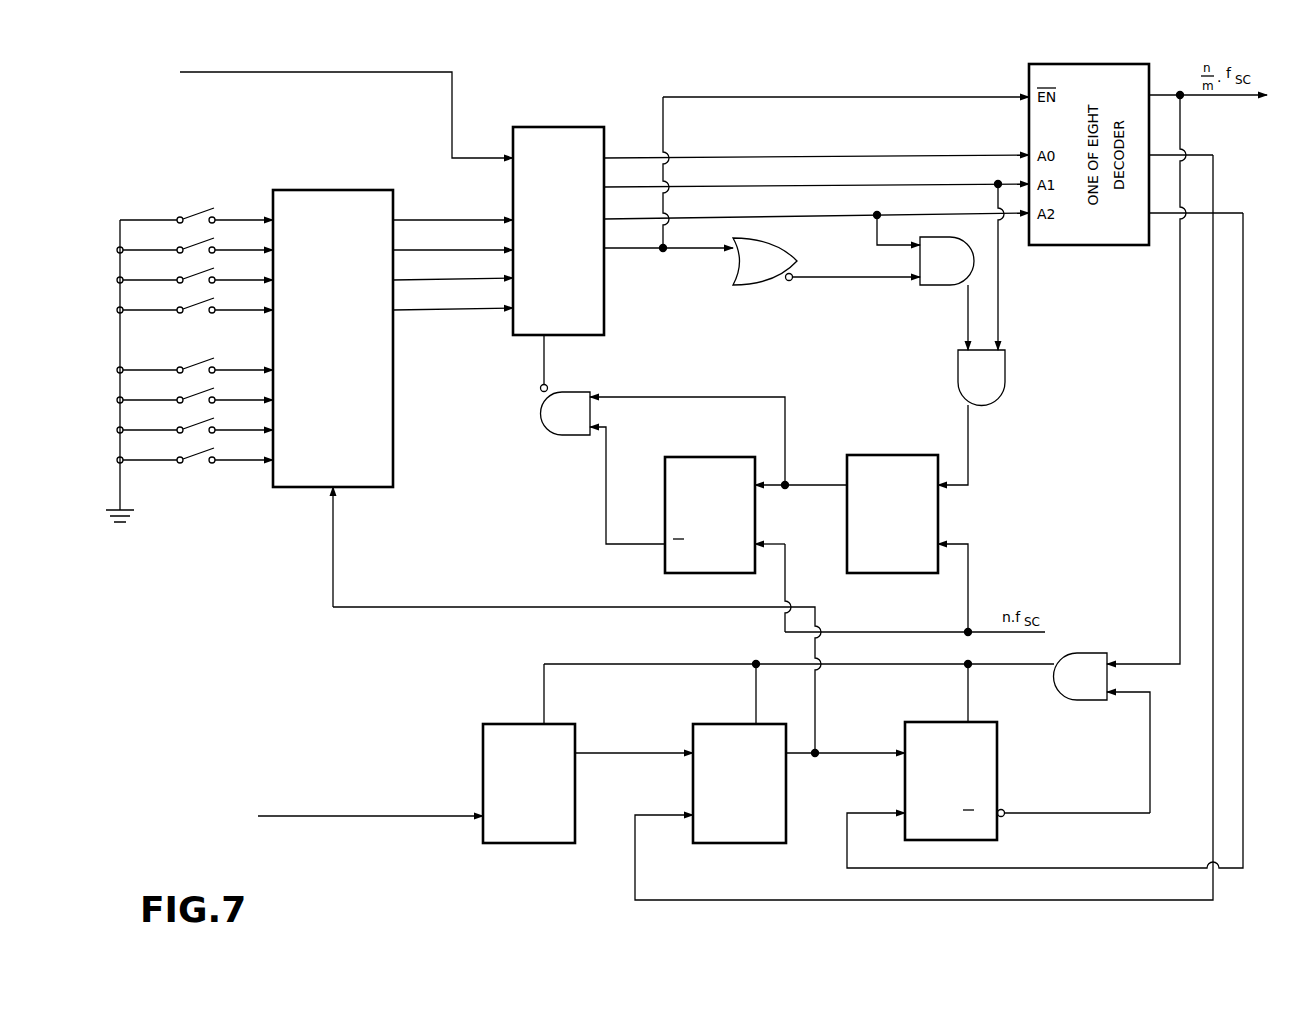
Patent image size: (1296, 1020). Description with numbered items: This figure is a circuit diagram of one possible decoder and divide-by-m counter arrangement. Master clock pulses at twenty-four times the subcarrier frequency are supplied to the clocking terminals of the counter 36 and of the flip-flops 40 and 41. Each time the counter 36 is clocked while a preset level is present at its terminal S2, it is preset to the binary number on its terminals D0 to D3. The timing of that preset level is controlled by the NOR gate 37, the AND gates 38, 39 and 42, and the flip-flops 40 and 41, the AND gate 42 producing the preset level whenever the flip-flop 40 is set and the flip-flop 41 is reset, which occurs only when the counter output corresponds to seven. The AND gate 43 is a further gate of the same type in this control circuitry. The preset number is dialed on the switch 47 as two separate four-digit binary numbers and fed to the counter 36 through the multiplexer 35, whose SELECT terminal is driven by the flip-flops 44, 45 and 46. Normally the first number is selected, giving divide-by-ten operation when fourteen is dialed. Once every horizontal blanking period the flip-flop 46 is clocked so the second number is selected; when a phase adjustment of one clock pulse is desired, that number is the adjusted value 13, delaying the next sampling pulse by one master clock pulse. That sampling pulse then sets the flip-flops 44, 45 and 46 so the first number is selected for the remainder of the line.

The clock input line n.fSC 13 is at (346, 103).
The multiplexer 35 is at (393, 470).
The counter 36 is at (604, 300).
The NOR gate 37 is at (770, 287).
The AND gate 38 is at (935, 285).
The AND gate 39 is at (1003, 398).
The flip-flop 40 is at (938, 535).
The flip-flop 41 is at (755, 535).
The AND gate 42 is at (540, 436).
The AND gate 43 is at (1085, 700).
The flip-flop 44 is at (997, 835).
The flip-flop 45 is at (783, 843).
The flip-flop 46 is at (548, 843).
The switch 47 is at (200, 488).